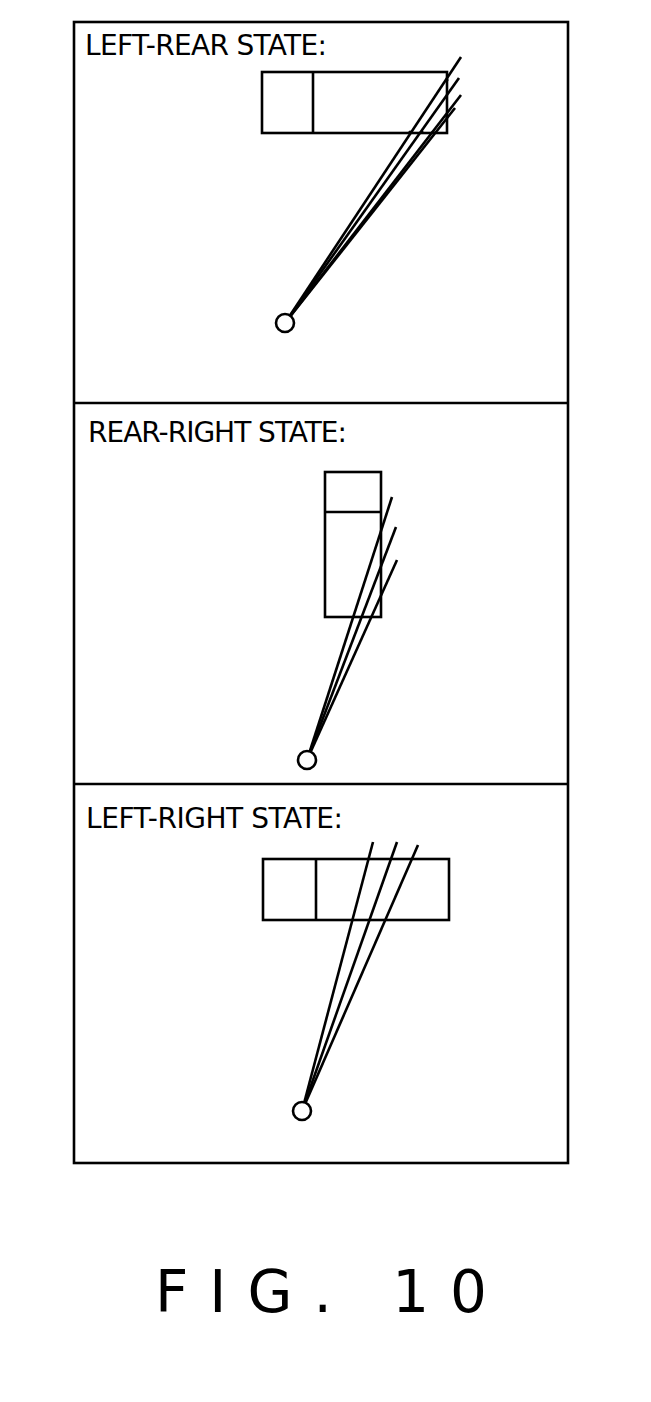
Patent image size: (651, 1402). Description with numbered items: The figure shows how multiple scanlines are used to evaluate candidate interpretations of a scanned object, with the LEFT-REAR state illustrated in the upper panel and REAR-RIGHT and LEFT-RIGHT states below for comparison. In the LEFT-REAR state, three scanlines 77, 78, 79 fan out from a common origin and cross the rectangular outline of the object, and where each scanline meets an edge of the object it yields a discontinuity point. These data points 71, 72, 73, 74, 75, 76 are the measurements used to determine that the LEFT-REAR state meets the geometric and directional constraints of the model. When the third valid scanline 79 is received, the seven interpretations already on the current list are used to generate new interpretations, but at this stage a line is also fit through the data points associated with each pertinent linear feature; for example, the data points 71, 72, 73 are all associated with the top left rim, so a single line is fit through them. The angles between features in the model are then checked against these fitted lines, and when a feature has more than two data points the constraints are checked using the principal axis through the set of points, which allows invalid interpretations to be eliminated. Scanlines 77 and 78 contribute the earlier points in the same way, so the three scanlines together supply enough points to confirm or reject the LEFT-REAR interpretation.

The data point 71 is at (410, 133).
The data point 72 is at (423, 134).
The data point 73 is at (434, 133).
The data point 74 is at (448, 117).
The data point 75 is at (455, 108).
The data point 76 is at (447, 81).
The scanline 77 is at (460, 95).
The scanline 78 is at (460, 77).
The third valid scanline 79 is at (456, 63).